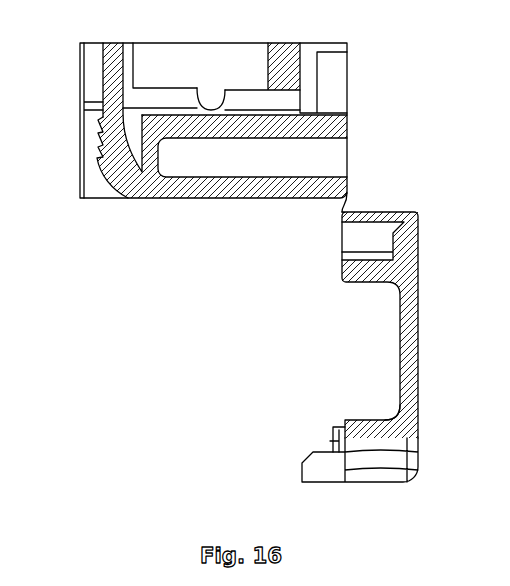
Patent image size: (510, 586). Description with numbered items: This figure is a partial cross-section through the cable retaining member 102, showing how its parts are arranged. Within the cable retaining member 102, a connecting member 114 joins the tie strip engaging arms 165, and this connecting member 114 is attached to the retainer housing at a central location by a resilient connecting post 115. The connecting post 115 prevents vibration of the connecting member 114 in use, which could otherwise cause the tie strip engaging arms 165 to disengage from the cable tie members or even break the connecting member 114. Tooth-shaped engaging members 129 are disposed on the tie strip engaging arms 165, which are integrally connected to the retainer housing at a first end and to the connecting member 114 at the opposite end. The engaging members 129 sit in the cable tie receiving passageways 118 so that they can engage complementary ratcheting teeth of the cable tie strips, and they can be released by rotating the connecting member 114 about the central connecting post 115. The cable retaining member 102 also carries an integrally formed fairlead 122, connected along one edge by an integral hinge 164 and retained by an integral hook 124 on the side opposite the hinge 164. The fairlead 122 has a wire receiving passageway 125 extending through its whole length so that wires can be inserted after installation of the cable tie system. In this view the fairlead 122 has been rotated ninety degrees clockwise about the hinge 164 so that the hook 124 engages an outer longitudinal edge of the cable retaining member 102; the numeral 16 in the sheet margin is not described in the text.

The cable retaining member 102 is at (80, 108).
The connecting member 114 is at (215, 53).
The connecting post 115 is at (203, 92).
The tie strip engaging arms 165 is at (112, 88).
The engaging members 129 is at (101, 145).
The cable tie receiving passageways 118 is at (93, 183).
The hinge 164 is at (350, 201).
The fairlead 122 is at (410, 298).
The wire receiving passageway 125 is at (388, 372).
The hook 124 is at (322, 468).
The device 16 is at (9, 387).